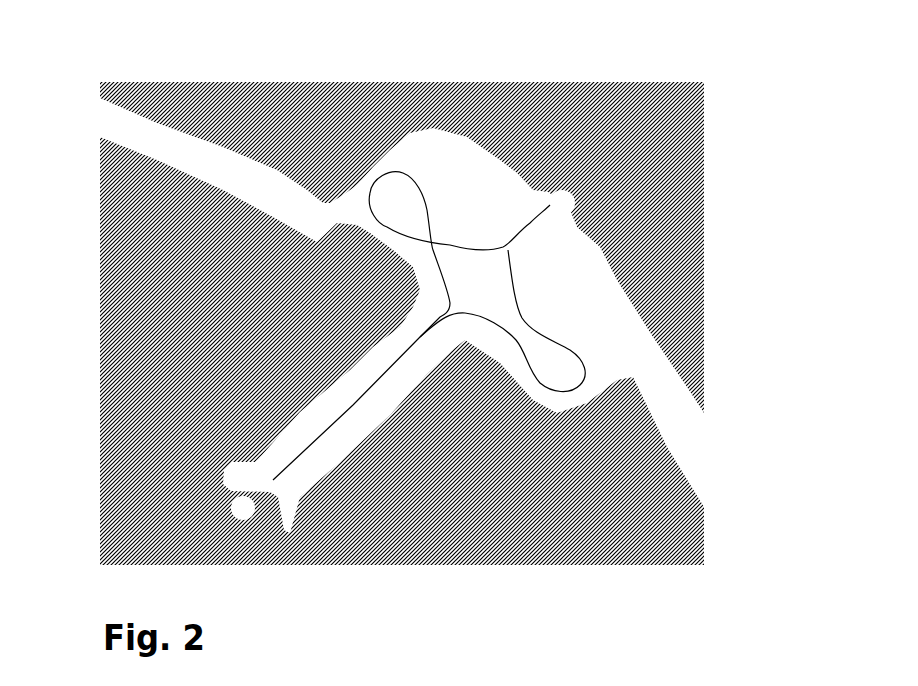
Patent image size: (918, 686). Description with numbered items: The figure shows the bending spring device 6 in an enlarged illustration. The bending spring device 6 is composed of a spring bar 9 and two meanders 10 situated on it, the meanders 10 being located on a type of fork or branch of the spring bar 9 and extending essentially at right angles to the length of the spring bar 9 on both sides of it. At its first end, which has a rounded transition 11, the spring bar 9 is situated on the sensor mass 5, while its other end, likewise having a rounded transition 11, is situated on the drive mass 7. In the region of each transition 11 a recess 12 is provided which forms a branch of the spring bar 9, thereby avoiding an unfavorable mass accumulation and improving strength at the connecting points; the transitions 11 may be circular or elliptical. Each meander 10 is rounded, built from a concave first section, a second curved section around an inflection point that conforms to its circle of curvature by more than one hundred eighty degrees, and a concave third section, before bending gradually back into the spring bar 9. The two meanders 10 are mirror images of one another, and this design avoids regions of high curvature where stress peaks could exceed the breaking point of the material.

The sensor mass 5 is at (648, 532).
The bending spring device 6 is at (585, 322).
The drive mass 7 is at (653, 117).
The spring bar 9 is at (522, 235).
The meander 10 is at (467, 242).
The rounded transition 11 is at (557, 230).
The recess 12 is at (563, 191).